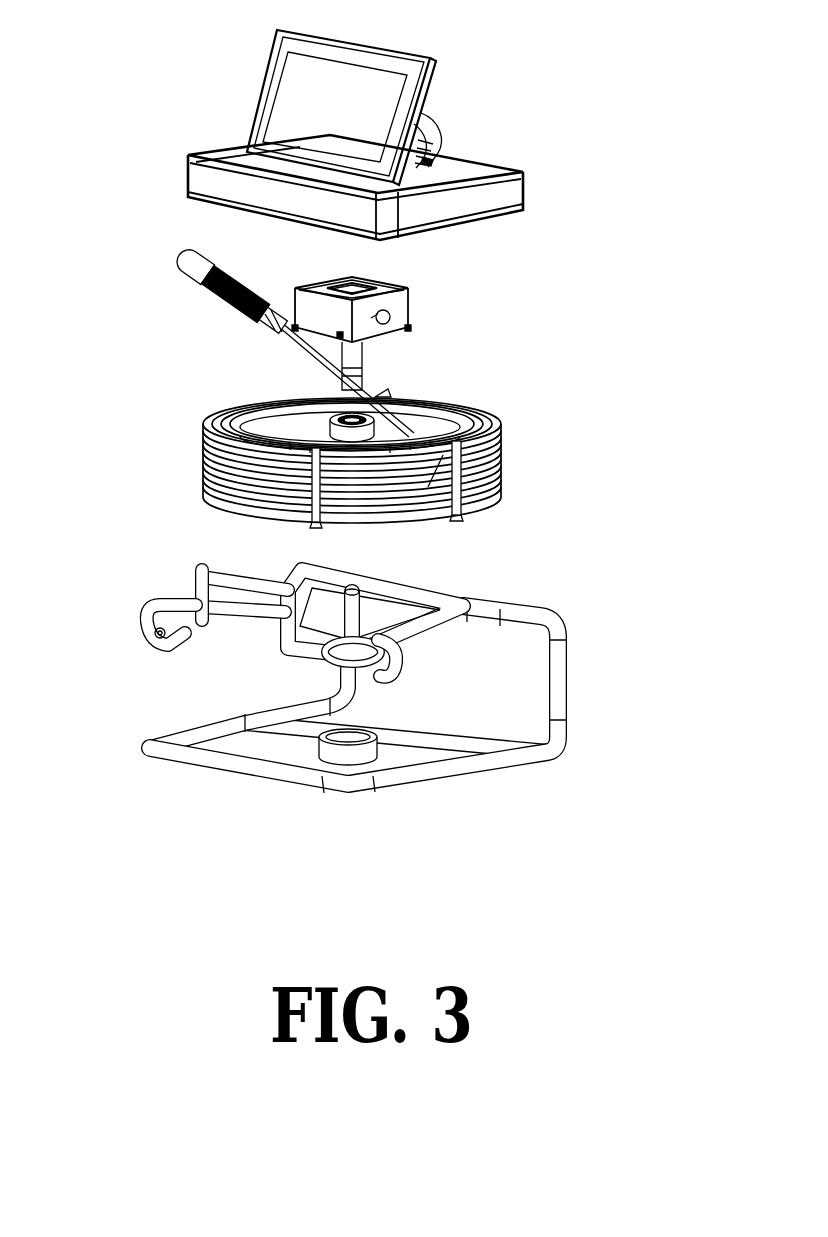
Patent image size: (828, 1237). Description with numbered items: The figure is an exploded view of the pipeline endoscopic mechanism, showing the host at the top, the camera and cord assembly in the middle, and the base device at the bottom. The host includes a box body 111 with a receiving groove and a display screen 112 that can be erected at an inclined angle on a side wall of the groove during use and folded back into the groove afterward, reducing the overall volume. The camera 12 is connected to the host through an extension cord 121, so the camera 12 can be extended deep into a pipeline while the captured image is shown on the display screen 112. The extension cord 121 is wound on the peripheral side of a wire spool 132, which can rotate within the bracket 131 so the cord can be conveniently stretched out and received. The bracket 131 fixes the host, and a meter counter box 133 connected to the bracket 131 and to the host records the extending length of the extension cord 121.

The box body 111 is at (467, 197).
The display screen 112 is at (313, 117).
The camera 12 is at (180, 262).
The meter counter box 133 is at (408, 293).
The wire spool 132 is at (297, 400).
The extension cord 121 is at (502, 422).
The bracket 131 is at (420, 624).